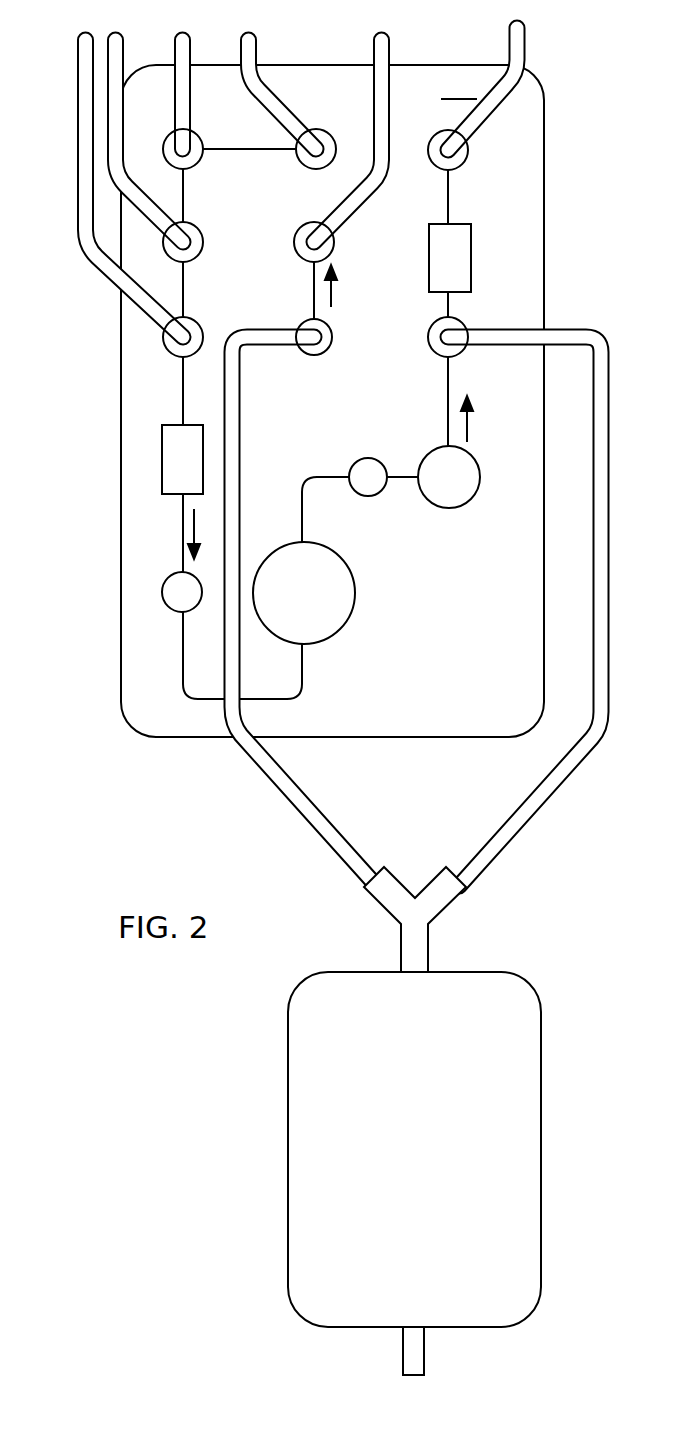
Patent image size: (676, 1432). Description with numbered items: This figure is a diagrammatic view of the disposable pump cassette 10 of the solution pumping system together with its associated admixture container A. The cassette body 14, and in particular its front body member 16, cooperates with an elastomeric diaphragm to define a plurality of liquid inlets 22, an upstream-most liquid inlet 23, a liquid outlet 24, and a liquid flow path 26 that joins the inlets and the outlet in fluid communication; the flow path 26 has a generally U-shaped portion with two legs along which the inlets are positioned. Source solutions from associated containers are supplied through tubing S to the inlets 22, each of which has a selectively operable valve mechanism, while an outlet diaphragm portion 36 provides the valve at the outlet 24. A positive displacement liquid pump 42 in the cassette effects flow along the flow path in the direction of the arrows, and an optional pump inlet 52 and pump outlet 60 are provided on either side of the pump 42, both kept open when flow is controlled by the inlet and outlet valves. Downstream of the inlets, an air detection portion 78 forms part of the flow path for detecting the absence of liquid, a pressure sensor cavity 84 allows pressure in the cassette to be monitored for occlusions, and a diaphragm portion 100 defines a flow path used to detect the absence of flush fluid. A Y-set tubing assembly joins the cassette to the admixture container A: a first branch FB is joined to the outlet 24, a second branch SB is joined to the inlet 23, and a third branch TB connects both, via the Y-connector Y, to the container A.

The pump cassette 10 is at (560, 91).
The cassette body 14 is at (551, 181).
The front body member 16 is at (459, 86).
The liquid inlets 22 is at (165, 153).
The upstream most liquid inlet 23 is at (333, 336).
The liquid outlet 24 is at (460, 350).
The liquid flow path 26 is at (334, 472).
The outlet diaphragm portion 36 is at (457, 166).
The positive displacement liquid pump 42 is at (346, 622).
The pump inlet 52 is at (165, 598).
The pump outlet 60 is at (368, 456).
The air detection portion 78 is at (161, 472).
The pressure sensor cavity 84 is at (447, 506).
The diaphragm portion 100 is at (470, 262).
The tubing S is at (77, 43).
The second branch SB is at (323, 838).
The first branch FB is at (550, 787).
The Y-connector Y is at (420, 895).
The third branch TB is at (427, 952).
The admixture container A is at (540, 1150).